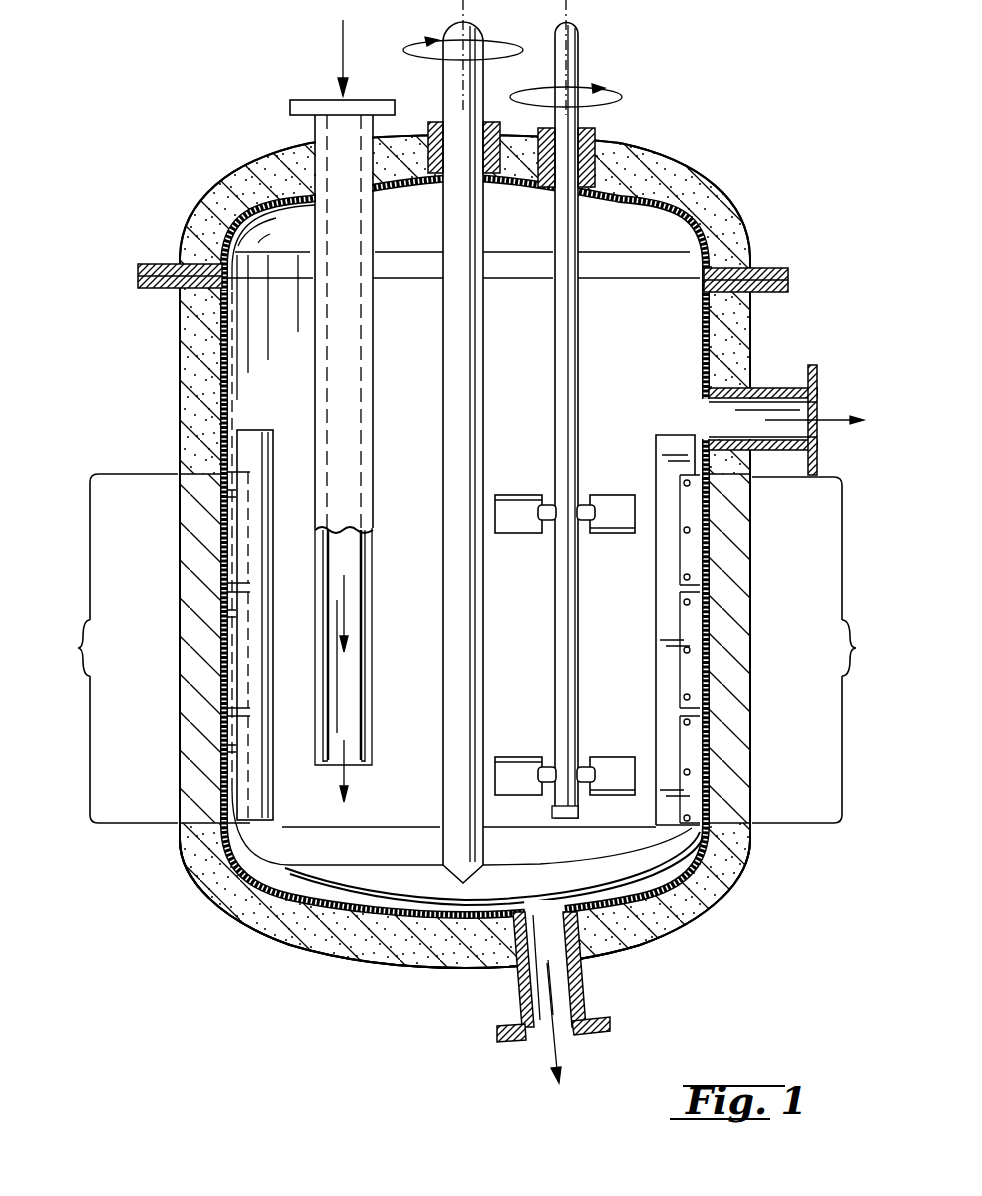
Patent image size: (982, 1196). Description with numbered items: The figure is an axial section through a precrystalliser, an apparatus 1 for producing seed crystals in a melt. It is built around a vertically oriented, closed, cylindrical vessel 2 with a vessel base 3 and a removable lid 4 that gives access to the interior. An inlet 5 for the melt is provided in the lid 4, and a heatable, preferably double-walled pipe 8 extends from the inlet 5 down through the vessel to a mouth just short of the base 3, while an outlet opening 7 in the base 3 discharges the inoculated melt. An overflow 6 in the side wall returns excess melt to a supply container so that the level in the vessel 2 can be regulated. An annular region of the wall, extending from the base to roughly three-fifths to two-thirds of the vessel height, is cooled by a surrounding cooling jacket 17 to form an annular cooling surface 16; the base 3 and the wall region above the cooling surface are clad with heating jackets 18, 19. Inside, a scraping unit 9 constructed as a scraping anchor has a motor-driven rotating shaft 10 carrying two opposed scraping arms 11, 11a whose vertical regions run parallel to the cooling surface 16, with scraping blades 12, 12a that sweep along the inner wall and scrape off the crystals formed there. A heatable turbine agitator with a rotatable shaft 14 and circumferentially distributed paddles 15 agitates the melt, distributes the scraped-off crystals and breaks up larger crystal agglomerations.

The apparatus 1 is at (198, 965).
The vessel 2 is at (184, 372).
The vessel base 3 is at (350, 908).
The removable lid 4 is at (262, 165).
The inlet 5 is at (333, 103).
The overflow 6 is at (748, 418).
The outlet opening 7 is at (560, 987).
The pipe 8 is at (366, 556).
The scraping unit 9 is at (190, 880).
The rotating shaft 10 is at (471, 385).
The scraping arm 11 is at (252, 440).
The scraping arm 11a is at (672, 440).
The scraping blades 12 is at (230, 523).
The scraping blades 12a is at (696, 535).
The rotatable shaft 14 is at (573, 322).
The paddles 15 is at (512, 522).
The annular cooling surface 16 is at (464, 648).
The cooling jacket 17 is at (188, 709).
The heating jacket 18 is at (288, 922).
The heating jacket 19 is at (193, 215).